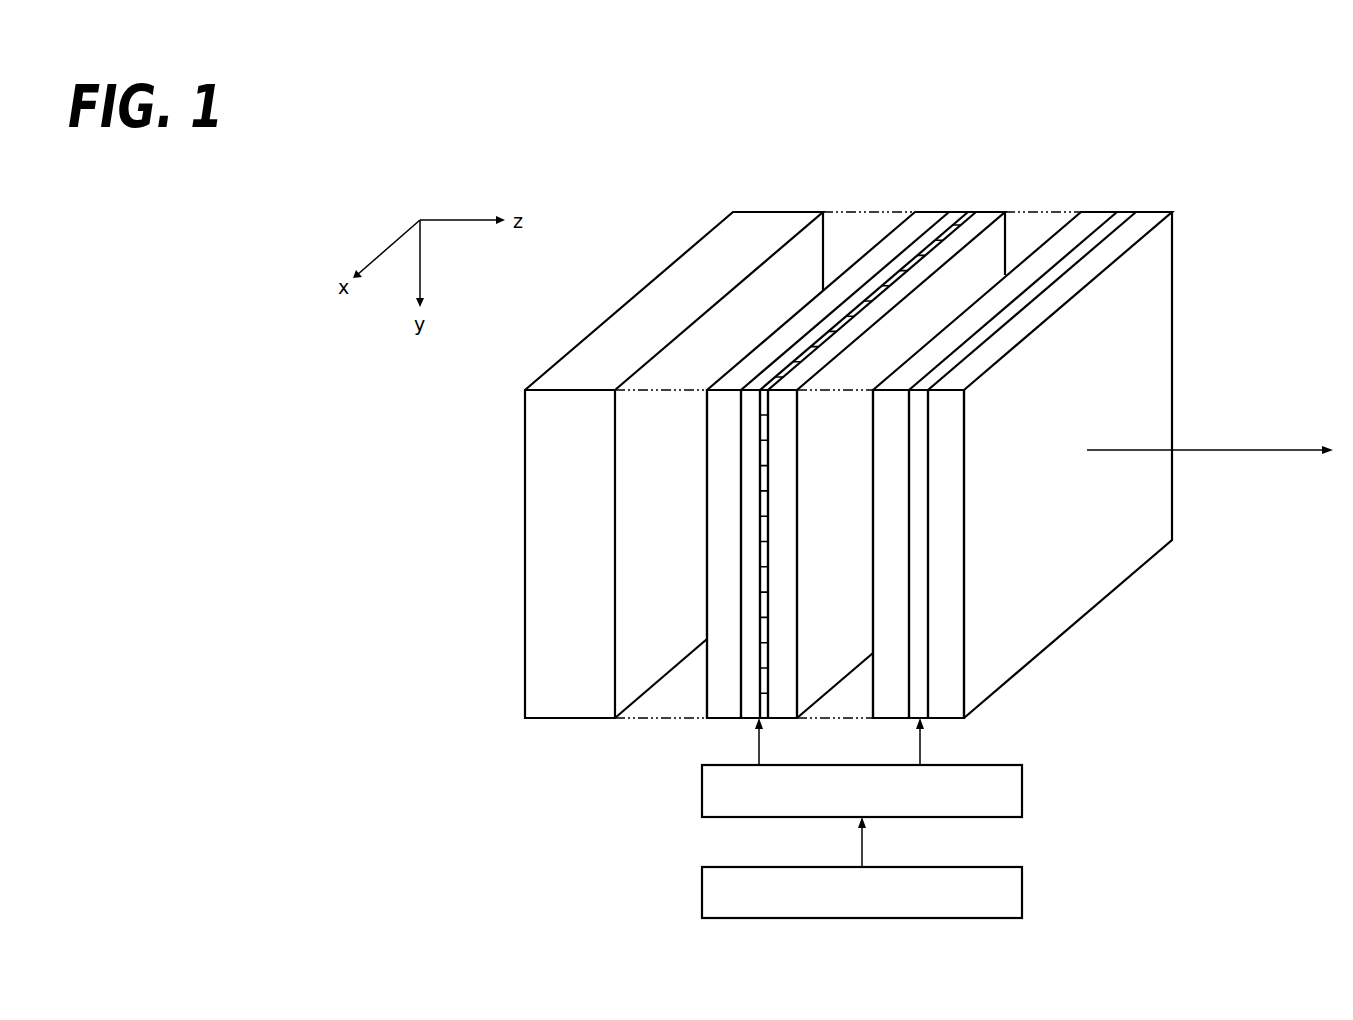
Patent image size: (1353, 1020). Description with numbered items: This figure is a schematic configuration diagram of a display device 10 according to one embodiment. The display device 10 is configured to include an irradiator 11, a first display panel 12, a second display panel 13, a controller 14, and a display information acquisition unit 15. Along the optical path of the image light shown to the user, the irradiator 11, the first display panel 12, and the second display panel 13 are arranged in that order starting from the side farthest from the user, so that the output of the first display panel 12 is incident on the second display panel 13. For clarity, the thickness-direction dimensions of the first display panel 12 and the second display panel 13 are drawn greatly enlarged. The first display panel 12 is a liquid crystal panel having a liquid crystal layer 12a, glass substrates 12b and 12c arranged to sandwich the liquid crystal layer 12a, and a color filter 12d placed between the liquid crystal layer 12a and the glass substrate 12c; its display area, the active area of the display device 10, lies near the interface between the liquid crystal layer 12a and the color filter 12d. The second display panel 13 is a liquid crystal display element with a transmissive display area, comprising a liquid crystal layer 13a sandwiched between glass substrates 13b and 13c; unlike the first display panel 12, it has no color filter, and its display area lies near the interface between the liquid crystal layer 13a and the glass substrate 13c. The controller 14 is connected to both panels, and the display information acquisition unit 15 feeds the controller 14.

The display device 10 is at (1250, 244).
The irradiator 11 is at (773, 211).
The first display panel 12 is at (1005, 198).
The liquid crystal layer 12a is at (748, 571).
The glass substrate 12b is at (724, 519).
The glass substrate 12c is at (781, 467).
The color filter 12d is at (763, 607).
The second display panel 13 is at (1172, 198).
The liquid crystal layer 13a is at (919, 471).
The glass substrate 13b is at (893, 522).
The glass substrate 13c is at (945, 537).
The controller 14 is at (1022, 789).
The display information acquisition unit 15 is at (1022, 891).